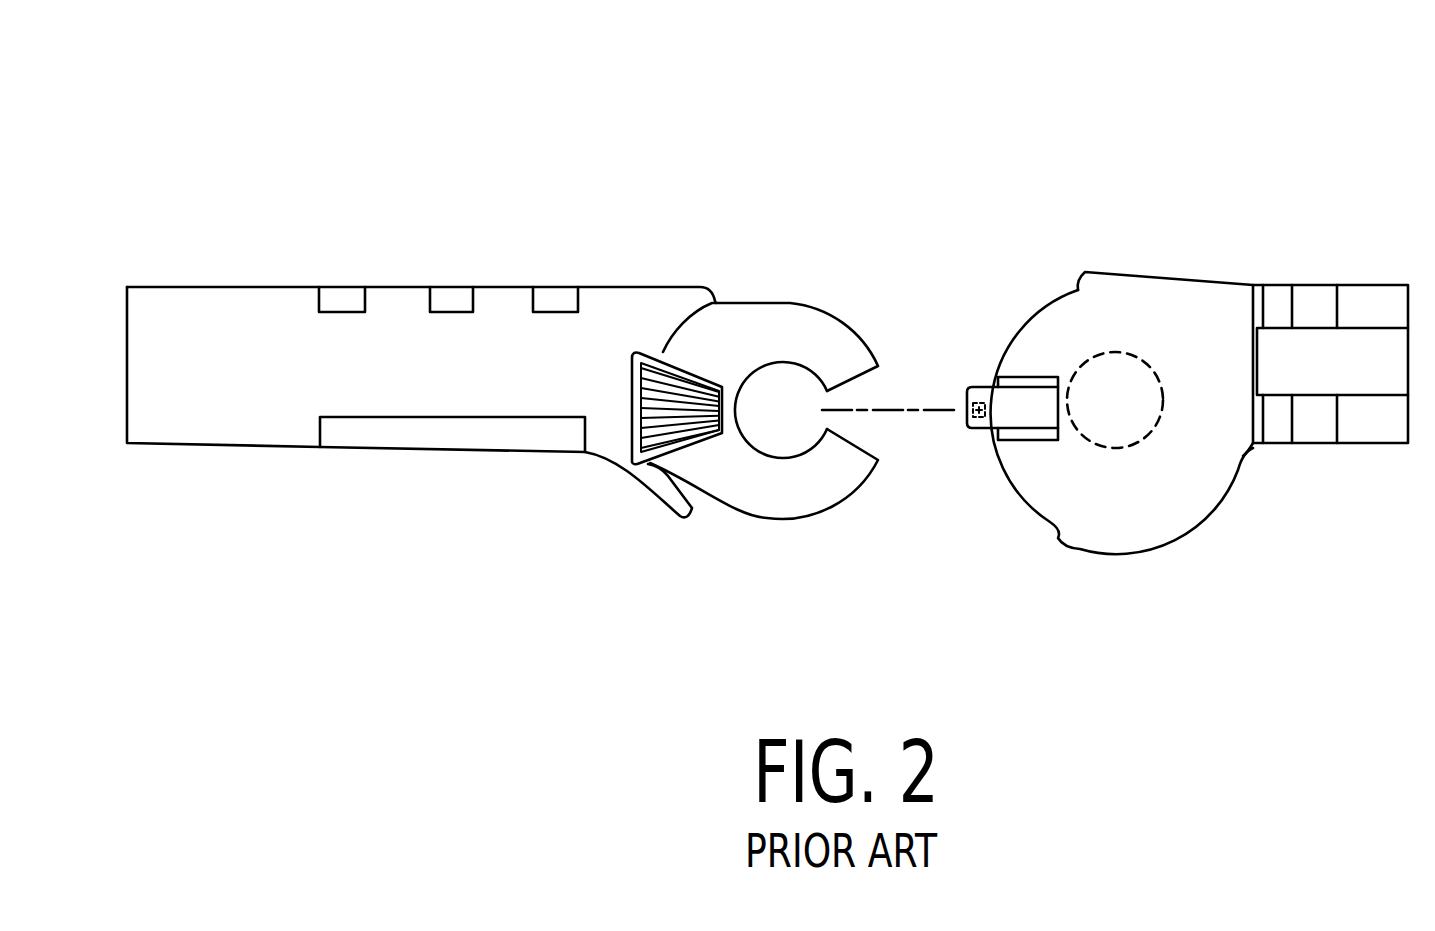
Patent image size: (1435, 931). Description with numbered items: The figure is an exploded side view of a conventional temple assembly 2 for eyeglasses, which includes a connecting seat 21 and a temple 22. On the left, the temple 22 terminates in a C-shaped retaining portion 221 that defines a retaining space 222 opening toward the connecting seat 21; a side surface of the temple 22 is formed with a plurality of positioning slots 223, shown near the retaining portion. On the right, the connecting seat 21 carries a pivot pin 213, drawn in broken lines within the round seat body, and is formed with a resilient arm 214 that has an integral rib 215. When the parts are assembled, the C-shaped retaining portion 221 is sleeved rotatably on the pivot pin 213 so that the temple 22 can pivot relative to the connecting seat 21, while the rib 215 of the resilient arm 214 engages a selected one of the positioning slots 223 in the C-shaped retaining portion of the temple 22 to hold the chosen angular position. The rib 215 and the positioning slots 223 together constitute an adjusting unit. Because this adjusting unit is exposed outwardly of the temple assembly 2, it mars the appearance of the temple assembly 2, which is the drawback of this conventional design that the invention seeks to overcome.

The temple assembly 2 is at (862, 140).
The connecting seat 21 is at (1305, 242).
The pivot pin 213 is at (1135, 445).
The resilient arm 214 is at (1023, 422).
The rib 215 is at (977, 422).
The temple 22 is at (312, 240).
The C-shaped retaining portion 221 is at (727, 337).
The retaining space 222 is at (797, 385).
The positioning slots 223 is at (647, 413).